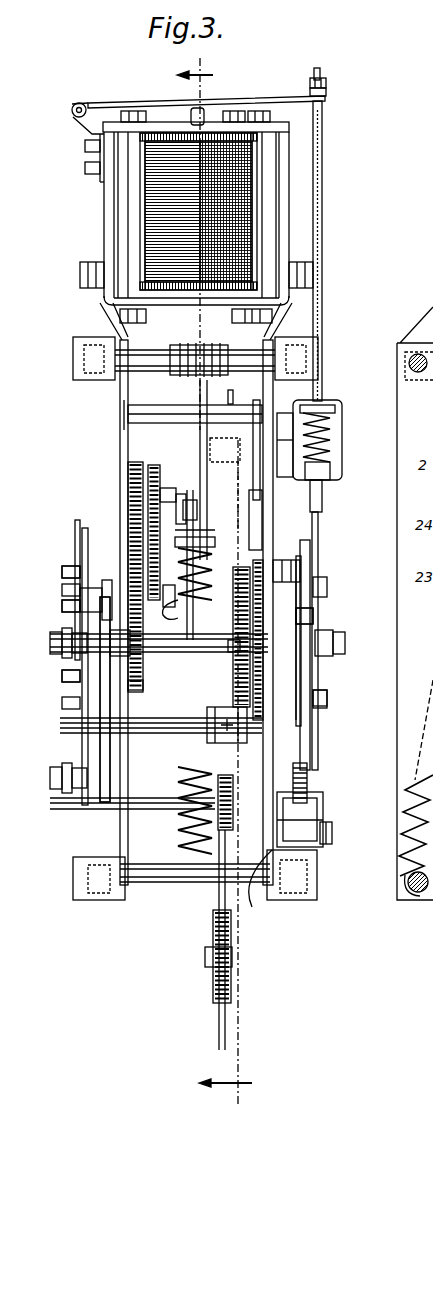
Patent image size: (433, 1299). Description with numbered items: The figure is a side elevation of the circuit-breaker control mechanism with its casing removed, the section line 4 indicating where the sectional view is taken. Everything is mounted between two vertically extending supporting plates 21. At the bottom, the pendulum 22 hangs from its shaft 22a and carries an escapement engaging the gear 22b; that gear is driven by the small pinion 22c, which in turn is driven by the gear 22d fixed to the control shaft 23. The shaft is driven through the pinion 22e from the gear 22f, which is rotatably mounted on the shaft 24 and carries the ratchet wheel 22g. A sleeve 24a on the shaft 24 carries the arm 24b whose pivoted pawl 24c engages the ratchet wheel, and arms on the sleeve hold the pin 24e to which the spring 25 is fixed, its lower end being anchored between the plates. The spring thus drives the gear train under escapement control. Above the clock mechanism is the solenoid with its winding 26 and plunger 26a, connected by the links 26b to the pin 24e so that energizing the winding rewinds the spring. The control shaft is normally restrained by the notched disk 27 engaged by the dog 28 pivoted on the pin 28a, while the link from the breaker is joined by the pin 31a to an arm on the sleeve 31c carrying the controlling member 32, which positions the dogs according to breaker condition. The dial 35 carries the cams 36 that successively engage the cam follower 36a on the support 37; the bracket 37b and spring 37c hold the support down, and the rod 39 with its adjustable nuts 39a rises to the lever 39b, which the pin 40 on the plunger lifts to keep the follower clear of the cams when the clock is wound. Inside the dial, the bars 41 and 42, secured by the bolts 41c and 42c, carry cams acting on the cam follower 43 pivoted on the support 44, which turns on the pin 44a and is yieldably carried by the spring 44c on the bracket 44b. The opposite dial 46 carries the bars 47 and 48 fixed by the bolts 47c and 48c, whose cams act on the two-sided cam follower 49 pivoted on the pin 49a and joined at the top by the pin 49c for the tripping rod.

The section line 4 is at (214, 582).
The supporting plates 21 is at (270, 500).
The pendulum 22 is at (215, 927).
The shaft 22a is at (233, 632).
The gear 22b is at (220, 745).
The pinion 22c is at (247, 722).
The gear 22d is at (235, 645).
The pinion 22e is at (140, 668).
The gear 22f is at (148, 468).
The ratchet wheel 22g is at (135, 462).
The control shaft 23 is at (133, 700).
The shaft 24 is at (258, 555).
The sleeve 24a is at (213, 548).
The arm 24b is at (173, 596).
The pawl 24c is at (170, 619).
The pin 24e is at (178, 505).
The spring 25 is at (178, 826).
The solenoid winding 26 is at (245, 217).
The plunger 26a is at (223, 330).
The links 26b is at (200, 406).
The disk 27 is at (263, 695).
The dog 28 is at (243, 600).
The pin 28a is at (303, 570).
The pin 31a is at (126, 406).
The sleeve 31c is at (233, 403).
The controlling member 32 is at (250, 456).
The dial 35 is at (318, 610).
The cams 36 is at (320, 755).
The cam follower 36a is at (325, 496).
The support 37 is at (330, 405).
The bracket 37b is at (288, 418).
The spring 37c is at (320, 437).
The rod 39 is at (324, 251).
The adjustable nuts 39a is at (326, 92).
The lever 39b is at (284, 97).
The pin 40 is at (209, 113).
The bar 41 is at (312, 690).
The bolts 41c is at (325, 700).
The bar 42 is at (313, 618).
The bolts 42c is at (336, 638).
The cam follower 43 is at (307, 782).
The support 44 is at (323, 850).
The pin 44a is at (337, 828).
The bracket 44b is at (259, 890).
The spring 44c is at (303, 862).
The dial 46 is at (82, 543).
The bar 47 is at (70, 594).
The bolts 47c is at (66, 677).
The bar 48 is at (77, 523).
The bolts 48c is at (66, 704).
The cam follower 49 is at (108, 733).
The pin 49a is at (85, 788).
The pin 49c is at (60, 636).